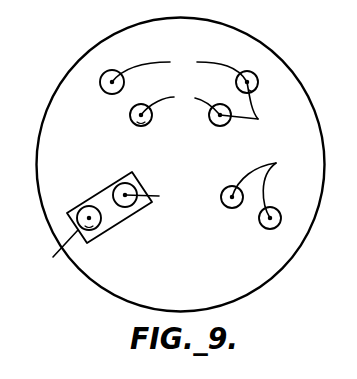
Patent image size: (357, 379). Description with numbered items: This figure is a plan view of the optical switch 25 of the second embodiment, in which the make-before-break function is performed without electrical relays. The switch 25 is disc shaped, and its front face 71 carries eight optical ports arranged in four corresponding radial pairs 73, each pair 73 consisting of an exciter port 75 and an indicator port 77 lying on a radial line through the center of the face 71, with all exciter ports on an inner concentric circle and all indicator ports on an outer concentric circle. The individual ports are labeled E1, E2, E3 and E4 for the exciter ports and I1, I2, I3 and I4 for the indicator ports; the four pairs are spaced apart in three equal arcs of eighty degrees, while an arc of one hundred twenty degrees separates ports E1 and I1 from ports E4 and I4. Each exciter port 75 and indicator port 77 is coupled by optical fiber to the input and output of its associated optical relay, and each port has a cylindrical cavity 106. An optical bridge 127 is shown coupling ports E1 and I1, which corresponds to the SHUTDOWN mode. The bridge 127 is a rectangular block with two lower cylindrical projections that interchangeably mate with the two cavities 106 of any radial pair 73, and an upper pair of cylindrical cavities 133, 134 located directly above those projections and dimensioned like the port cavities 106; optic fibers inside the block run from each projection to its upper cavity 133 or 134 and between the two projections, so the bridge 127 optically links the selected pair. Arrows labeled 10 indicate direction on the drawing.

The optical switch 25 is at (240, 27).
The switch face 71 is at (60, 176).
The indicator port 77 is at (179, 66).
The exciter port 75 is at (180, 100).
The cylindrical cavities 106 is at (256, 107).
The radial pair 73 is at (266, 186).
The optical bridge 127 is at (112, 228).
The upper cylindrical cavity 134 is at (158, 196).
The upper cylindrical cavity 133 is at (49, 251).
The direction of motion 10 is at (157, 173).
The indicator port I1 is at (91, 239).
The indicator port I2 is at (100, 85).
The indicator port I3 is at (258, 88).
The indicator port I4 is at (279, 208).
The exciter port E1 is at (141, 210).
The exciter port E2 is at (152, 126).
The exciter port E3 is at (210, 126).
The exciter port E4 is at (227, 210).